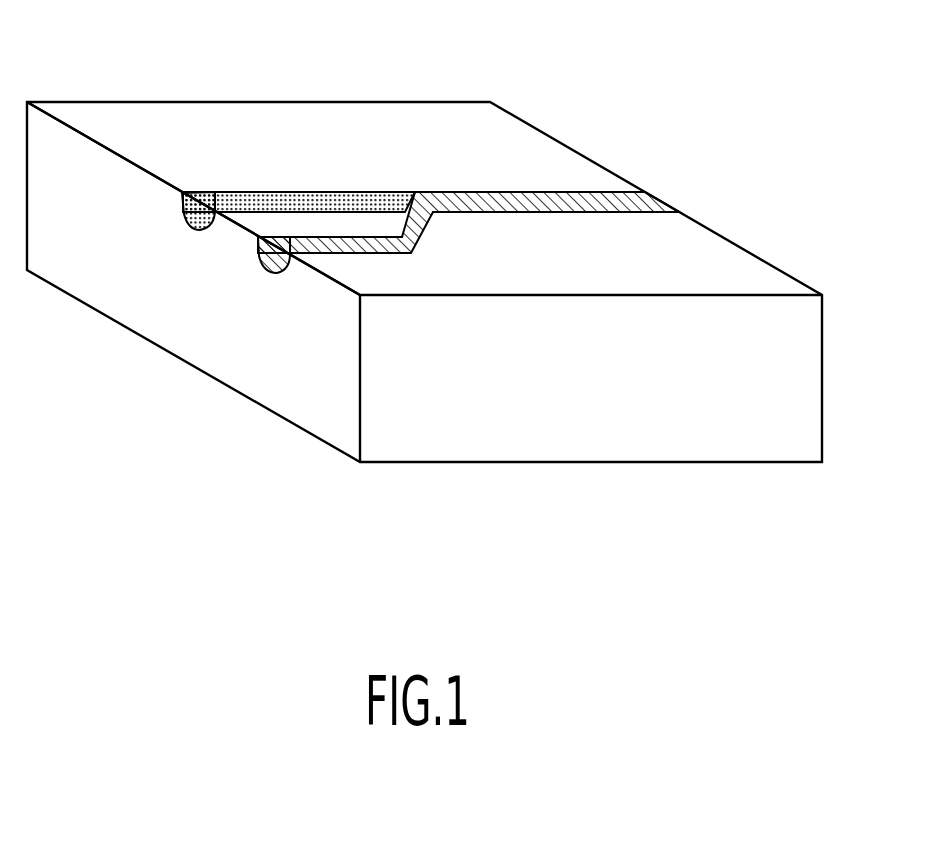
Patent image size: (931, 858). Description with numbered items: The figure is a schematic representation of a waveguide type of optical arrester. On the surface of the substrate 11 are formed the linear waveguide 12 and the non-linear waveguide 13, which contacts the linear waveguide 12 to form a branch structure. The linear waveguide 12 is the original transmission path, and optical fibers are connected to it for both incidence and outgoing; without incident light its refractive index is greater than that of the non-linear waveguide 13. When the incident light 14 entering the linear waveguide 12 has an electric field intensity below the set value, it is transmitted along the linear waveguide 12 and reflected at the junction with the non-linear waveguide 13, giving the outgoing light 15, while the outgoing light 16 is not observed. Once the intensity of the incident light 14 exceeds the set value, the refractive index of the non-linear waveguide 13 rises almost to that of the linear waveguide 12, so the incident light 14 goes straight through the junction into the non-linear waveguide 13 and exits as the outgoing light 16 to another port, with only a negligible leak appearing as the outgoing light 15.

The substrate 11 is at (602, 428).
The linear waveguide 12 is at (347, 253).
The non-linear waveguide 13 is at (330, 193).
The incident light 14 is at (702, 205).
The outgoing light 15 is at (258, 252).
The outgoing light 16 is at (183, 215).